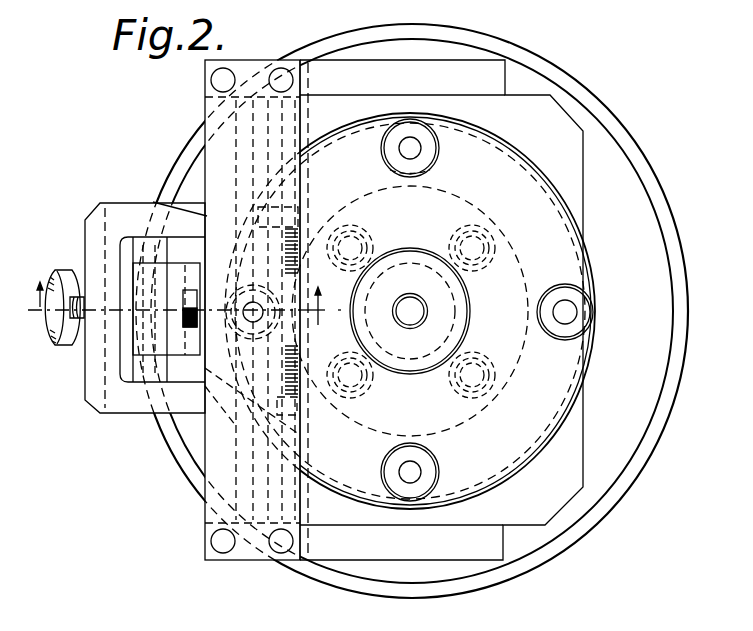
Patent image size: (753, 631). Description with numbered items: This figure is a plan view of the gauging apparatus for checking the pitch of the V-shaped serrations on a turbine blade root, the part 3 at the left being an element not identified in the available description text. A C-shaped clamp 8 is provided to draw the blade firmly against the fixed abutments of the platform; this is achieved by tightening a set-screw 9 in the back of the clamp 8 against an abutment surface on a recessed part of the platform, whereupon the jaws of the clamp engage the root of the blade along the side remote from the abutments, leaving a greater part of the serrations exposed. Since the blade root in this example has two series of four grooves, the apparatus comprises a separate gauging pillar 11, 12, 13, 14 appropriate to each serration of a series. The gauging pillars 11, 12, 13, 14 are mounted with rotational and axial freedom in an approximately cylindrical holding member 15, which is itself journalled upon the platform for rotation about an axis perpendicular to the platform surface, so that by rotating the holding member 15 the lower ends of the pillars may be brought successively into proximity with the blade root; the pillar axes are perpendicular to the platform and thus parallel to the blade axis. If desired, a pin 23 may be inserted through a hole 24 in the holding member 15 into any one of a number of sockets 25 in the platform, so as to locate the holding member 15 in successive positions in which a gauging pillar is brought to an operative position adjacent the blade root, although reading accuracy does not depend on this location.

The adjusting shaft 3 is at (184, 319).
The C-shaped clamp 8 is at (130, 411).
The set-screw 9 is at (62, 345).
The gauging pillar 11 is at (262, 304).
The gauging pillar 12 is at (421, 150).
The gauging pillar 13 is at (561, 323).
The gauging pillar 14 is at (421, 470).
The holding member 15 is at (594, 283).
The pin 23 is at (362, 382).
The hole 24 is at (372, 357).
The sockets 25 is at (372, 237).